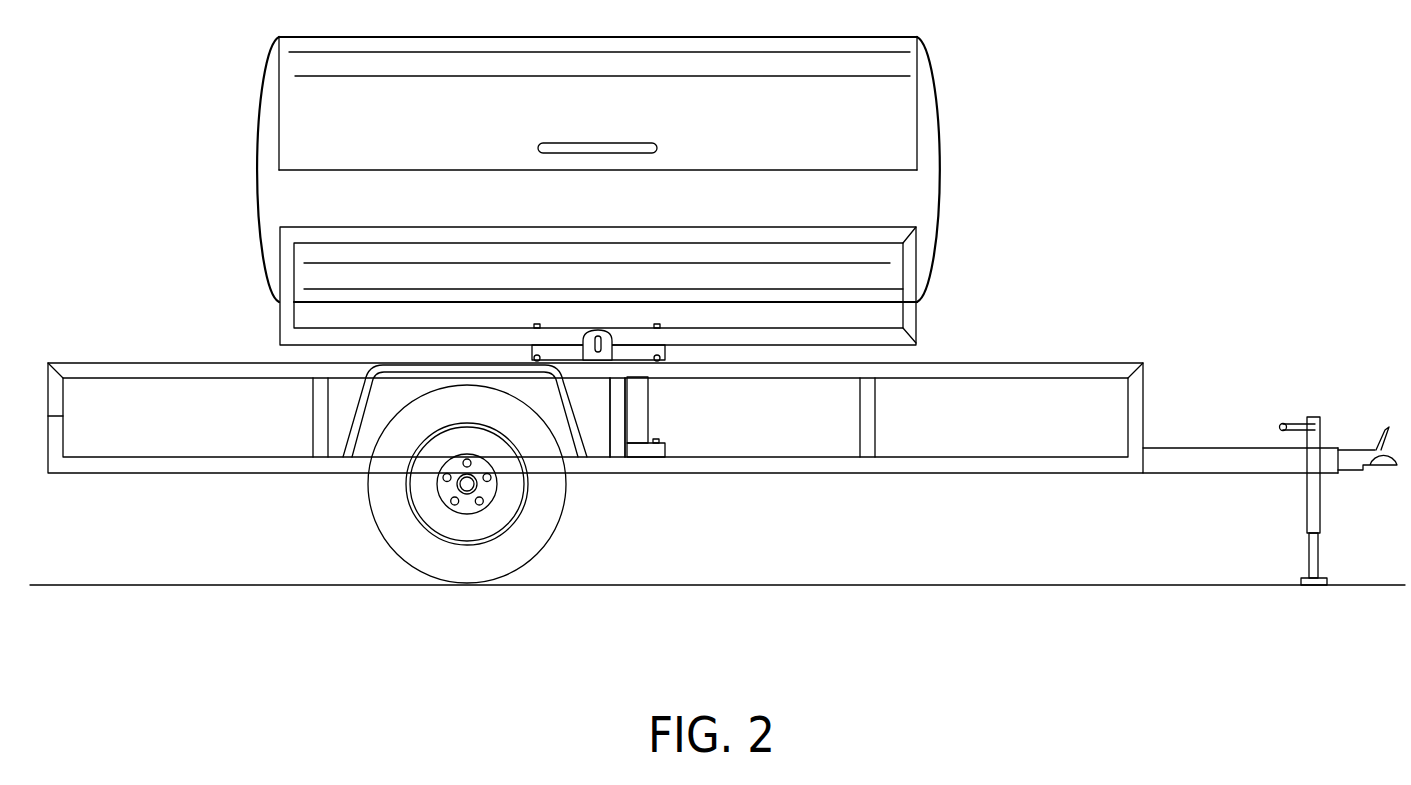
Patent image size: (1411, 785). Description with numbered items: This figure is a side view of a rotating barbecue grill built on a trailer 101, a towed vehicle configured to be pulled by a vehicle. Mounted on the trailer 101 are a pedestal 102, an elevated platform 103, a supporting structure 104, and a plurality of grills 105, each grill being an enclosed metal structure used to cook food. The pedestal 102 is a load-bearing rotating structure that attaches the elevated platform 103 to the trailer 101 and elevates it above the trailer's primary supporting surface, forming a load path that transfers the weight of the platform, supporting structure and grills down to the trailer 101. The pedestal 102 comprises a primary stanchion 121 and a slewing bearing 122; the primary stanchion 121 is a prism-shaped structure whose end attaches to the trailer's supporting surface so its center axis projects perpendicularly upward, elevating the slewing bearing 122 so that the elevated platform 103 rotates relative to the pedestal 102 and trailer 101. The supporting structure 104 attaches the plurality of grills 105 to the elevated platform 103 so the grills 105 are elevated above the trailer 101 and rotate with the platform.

The trailer 101 is at (1152, 445).
The pedestal 102 is at (640, 435).
The elevated platform 103 is at (878, 338).
The supporting structure 104 is at (907, 280).
The plurality of grills 105 is at (943, 177).
The primary stanchion 121 is at (648, 410).
The slewing bearing 122 is at (562, 350).